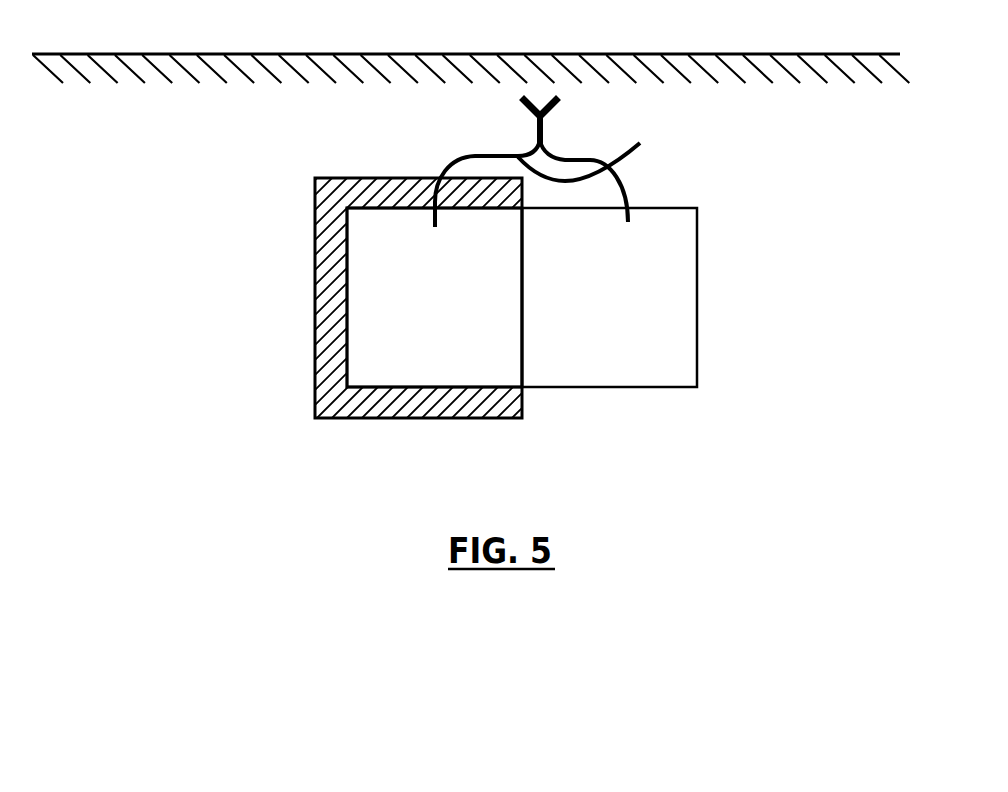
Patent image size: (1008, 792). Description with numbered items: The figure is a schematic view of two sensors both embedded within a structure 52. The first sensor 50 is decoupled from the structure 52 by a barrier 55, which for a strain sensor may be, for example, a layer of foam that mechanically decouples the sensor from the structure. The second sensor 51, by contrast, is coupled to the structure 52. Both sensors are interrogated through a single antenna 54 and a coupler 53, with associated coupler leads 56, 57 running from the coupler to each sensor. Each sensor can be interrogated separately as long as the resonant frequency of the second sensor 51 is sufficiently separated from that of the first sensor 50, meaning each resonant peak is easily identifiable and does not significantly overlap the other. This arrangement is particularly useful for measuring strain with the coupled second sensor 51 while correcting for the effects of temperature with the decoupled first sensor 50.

The first sensor 50 is at (445, 306).
The second sensor 51 is at (623, 307).
The structure 52 is at (188, 258).
The coupler 53 is at (603, 165).
The antenna 54 is at (548, 114).
The barrier 55 is at (370, 410).
The coupler lead 56 is at (455, 157).
The coupler lead 57 is at (628, 186).